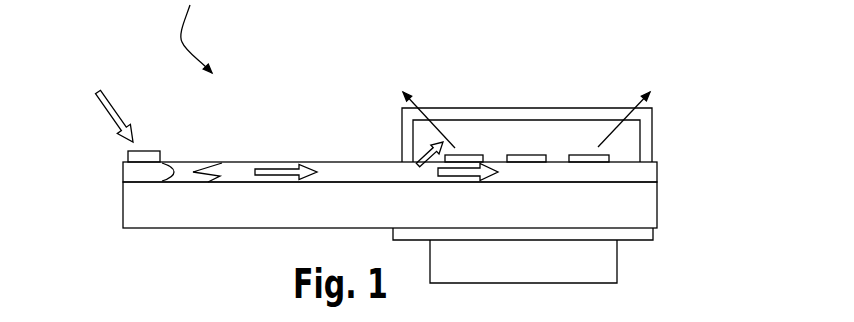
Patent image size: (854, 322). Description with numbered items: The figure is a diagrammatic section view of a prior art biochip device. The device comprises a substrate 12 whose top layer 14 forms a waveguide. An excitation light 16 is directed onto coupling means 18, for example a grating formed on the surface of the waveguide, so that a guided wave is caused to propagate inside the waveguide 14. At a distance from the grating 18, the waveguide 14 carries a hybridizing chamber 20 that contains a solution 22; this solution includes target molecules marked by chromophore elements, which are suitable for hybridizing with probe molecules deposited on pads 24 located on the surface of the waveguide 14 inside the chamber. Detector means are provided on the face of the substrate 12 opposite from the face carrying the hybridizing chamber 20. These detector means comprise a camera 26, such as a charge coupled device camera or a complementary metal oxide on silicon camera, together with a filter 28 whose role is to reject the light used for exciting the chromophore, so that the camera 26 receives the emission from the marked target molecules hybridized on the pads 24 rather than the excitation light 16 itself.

The substrate 12 is at (650, 202).
The top layer 14 is at (650, 170).
The excitation light 16 is at (113, 105).
The coupling means 18 is at (128, 154).
The hybridizing chamber 20 is at (495, 108).
The solution 22 is at (588, 135).
The pads 24 is at (545, 155).
The camera 26 is at (607, 265).
The filter 28 is at (648, 236).